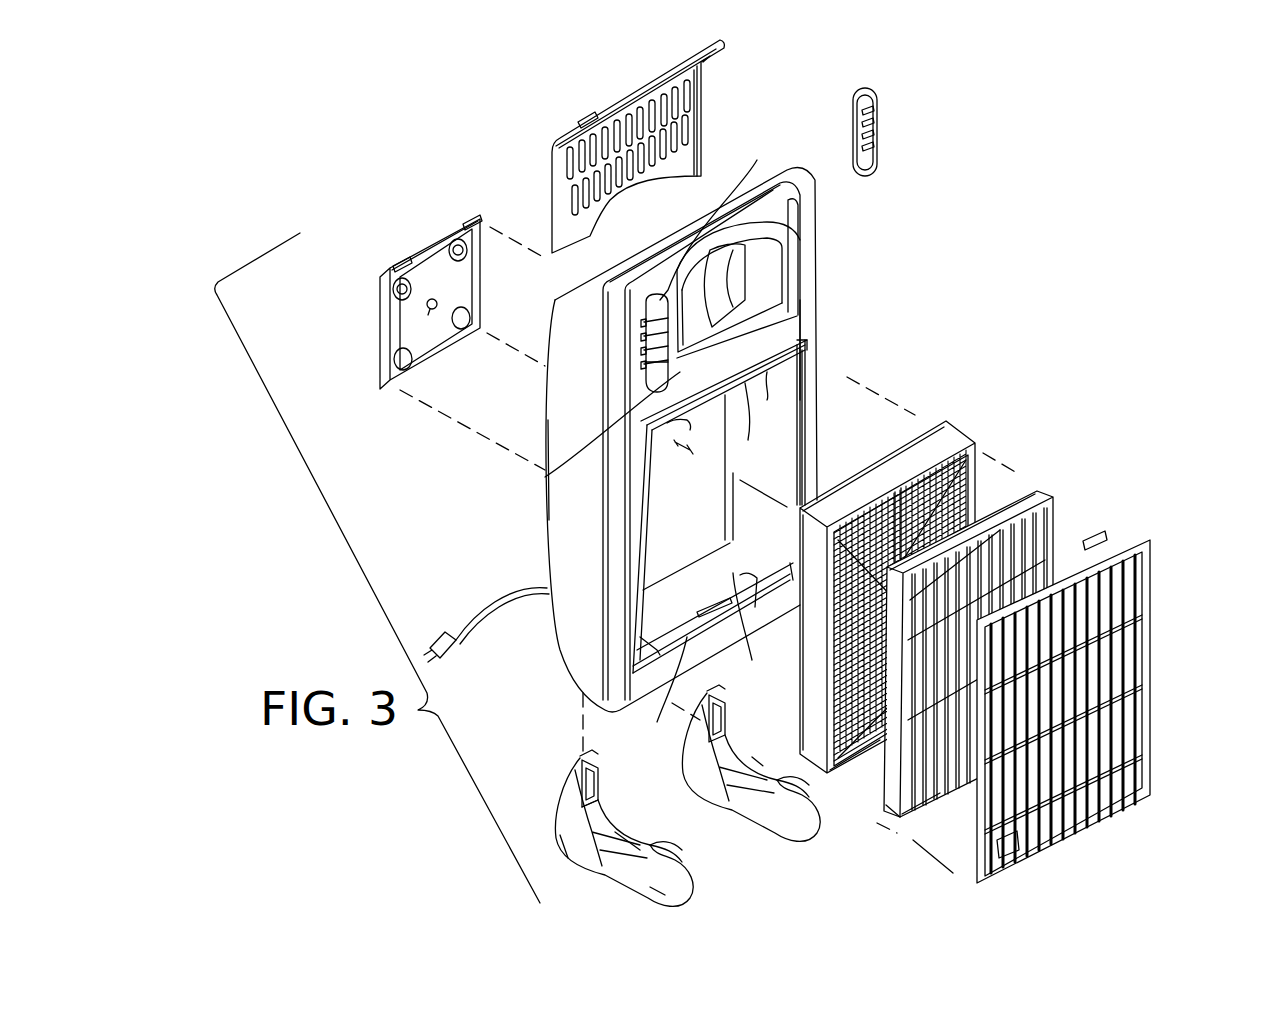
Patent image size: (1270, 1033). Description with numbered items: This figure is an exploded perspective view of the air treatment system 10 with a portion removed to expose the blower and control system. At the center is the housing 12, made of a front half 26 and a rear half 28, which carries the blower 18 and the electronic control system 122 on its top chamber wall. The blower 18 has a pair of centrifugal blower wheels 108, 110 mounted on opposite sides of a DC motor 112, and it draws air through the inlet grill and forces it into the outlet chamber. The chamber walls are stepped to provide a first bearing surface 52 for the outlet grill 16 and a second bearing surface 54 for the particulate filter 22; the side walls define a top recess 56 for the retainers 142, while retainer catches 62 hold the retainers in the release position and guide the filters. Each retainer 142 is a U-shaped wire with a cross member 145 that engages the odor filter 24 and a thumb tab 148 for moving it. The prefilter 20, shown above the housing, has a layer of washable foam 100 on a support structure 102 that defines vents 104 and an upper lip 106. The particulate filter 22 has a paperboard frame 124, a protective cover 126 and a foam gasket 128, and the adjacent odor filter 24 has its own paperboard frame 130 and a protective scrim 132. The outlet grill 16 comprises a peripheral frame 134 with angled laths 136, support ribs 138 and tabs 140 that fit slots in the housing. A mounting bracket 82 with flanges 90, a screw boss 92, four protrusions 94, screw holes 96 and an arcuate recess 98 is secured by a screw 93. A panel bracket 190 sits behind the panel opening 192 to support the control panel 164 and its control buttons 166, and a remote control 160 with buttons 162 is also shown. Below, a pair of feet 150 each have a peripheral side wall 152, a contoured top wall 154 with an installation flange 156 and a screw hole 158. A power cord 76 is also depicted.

The air treatment system 10 is at (938, 240).
The housing 12 is at (824, 272).
The outlet grill 16 is at (1108, 694).
The blower 18 is at (799, 277).
The prefilter 20 is at (640, 129).
The particulate filter 22 is at (926, 583).
The odor filter 24 is at (1038, 689).
The front half 26 is at (824, 320).
The rear half 28 is at (548, 512).
The first bearing surface 52 is at (808, 411).
The second bearing surface 54 is at (727, 507).
The top recess 56 is at (824, 353).
The retainer catches 62 is at (768, 388).
The power cord 76 is at (494, 600).
The mounting bracket 82 is at (420, 304).
The flanges 90 is at (470, 217).
The screw boss 92 is at (433, 311).
The screw 93 is at (678, 449).
The protrusions 94 is at (473, 300).
The screw holes 96 is at (393, 280).
The arcuate recess 98 is at (428, 250).
The washable foam 100 is at (582, 118).
The support structure 102 is at (702, 133).
The vents 104 is at (650, 113).
The lip 106 is at (677, 68).
The centrifugal blower wheel 108 is at (800, 205).
The centrifugal blower wheel 110 is at (748, 300).
The DC motor 112 is at (745, 268).
The electronic control system 122 is at (806, 320).
The paperboard frame 124 is at (968, 441).
The protective cover 126 is at (867, 750).
The foam gasket 128 is at (912, 418).
The paperboard frame 130 is at (1060, 518).
The protective scrim 132 is at (927, 820).
The peripheral frame 134 is at (940, 850).
The angled laths 136 is at (1112, 670).
The support ribs 138 is at (1110, 600).
The tabs 140 is at (1092, 546).
The retainers 142 is at (748, 440).
The cross member 145 is at (697, 623).
The thumb tab 148 is at (735, 476).
The feet 150 is at (568, 812).
The peripheral side wall 152 is at (577, 850).
The top wall 154 is at (620, 830).
The installation flange 156 is at (600, 740).
The screw hole 158 is at (688, 845).
The remote control 160 is at (876, 132).
The control buttons 162 is at (856, 125).
The control panel 164 is at (643, 340).
The control buttons 166 is at (645, 365).
The panel bracket 190 is at (757, 160).
The panel opening 192 is at (550, 474).